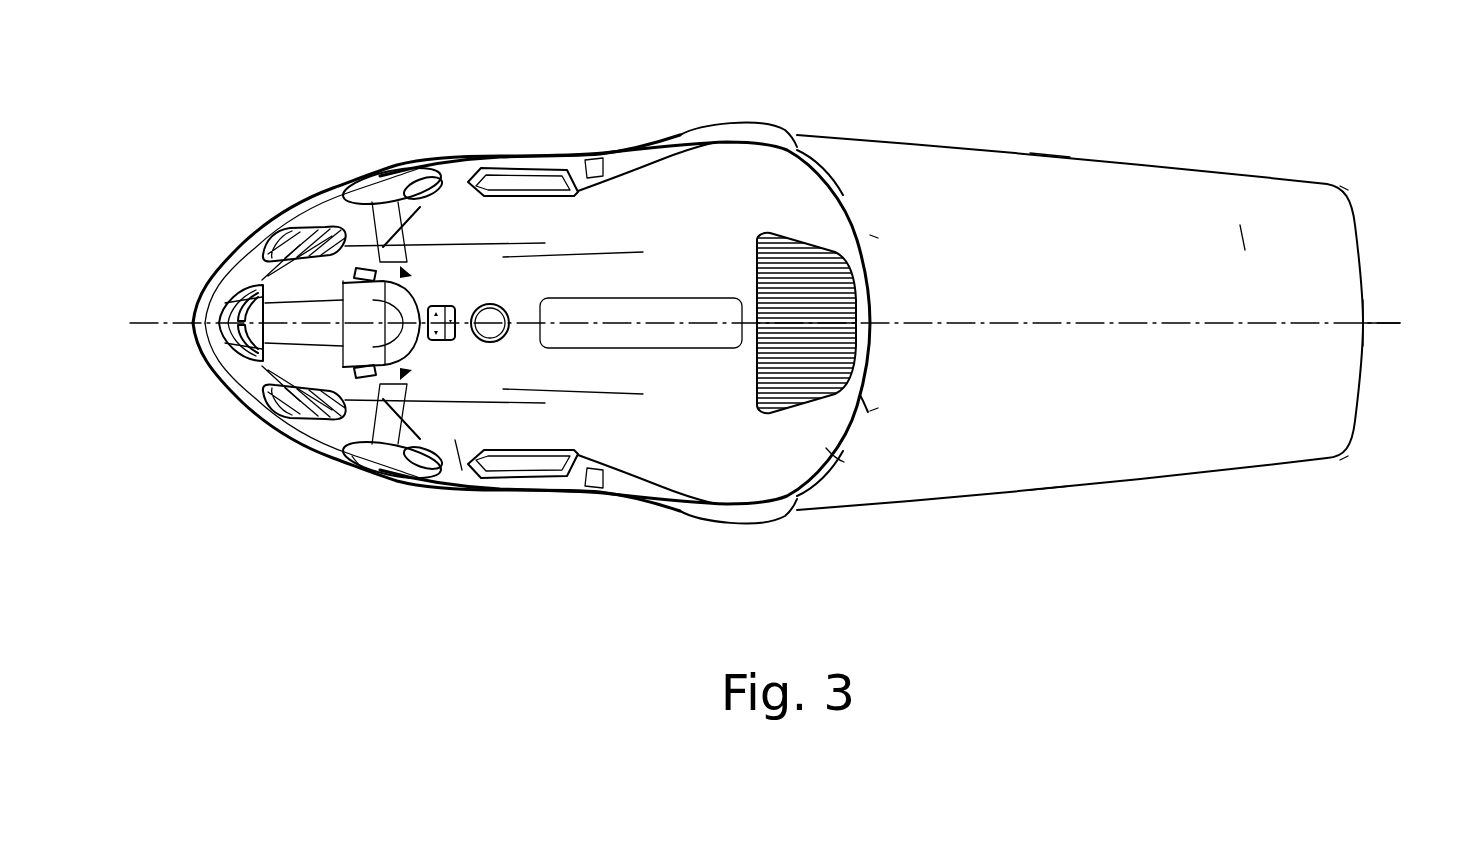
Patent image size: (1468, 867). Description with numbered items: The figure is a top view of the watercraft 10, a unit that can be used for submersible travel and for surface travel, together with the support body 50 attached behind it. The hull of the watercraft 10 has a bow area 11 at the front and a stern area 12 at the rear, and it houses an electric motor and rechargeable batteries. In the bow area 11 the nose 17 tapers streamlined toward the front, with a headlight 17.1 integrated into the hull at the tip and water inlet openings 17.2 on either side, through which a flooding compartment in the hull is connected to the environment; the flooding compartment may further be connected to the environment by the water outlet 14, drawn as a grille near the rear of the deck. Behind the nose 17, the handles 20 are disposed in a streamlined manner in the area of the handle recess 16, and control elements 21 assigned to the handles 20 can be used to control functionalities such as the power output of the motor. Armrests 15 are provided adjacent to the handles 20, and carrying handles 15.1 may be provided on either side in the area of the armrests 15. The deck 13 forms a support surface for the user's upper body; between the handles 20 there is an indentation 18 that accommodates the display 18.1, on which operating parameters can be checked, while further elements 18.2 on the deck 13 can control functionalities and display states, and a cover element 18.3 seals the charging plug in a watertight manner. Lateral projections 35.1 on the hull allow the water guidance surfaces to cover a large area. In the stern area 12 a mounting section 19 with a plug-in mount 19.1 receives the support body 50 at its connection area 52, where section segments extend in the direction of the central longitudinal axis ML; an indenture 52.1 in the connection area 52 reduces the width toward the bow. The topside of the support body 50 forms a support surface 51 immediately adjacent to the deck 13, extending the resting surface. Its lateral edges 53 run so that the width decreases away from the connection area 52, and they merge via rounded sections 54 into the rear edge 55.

The watercraft 10 is at (622, 116).
The bow area 11 is at (246, 230).
The stern area 12 is at (687, 163).
The deck 13 is at (583, 237).
The water outlet 14 is at (845, 265).
The armrest 15 is at (460, 452).
The carrying handle 15.1 is at (508, 482).
The handle recess 16 is at (360, 460).
The nose 17 is at (277, 333).
The headlight 17.1 is at (252, 272).
The water inlet opening 17.2 is at (325, 229).
The indentation 18 is at (413, 167).
The display 18.1 is at (355, 262).
The further element 18.2 is at (455, 303).
The cover element 18.3 is at (500, 338).
The mounting section 19 is at (833, 446).
The plug-in mount 19.1 is at (866, 404).
The handle 20 is at (393, 163).
The control element 21 is at (345, 200).
The lateral projection 35.1 is at (740, 519).
The support body 50 is at (1143, 188).
The support surface 51 is at (1243, 240).
The connection area 52 is at (873, 243).
The indenture 52.1 is at (800, 150).
The lateral edge 53 is at (1052, 156).
The rounded section 54 is at (1347, 184).
The rear edge 55 is at (1364, 313).
The central longitudinal axis ML is at (1380, 327).